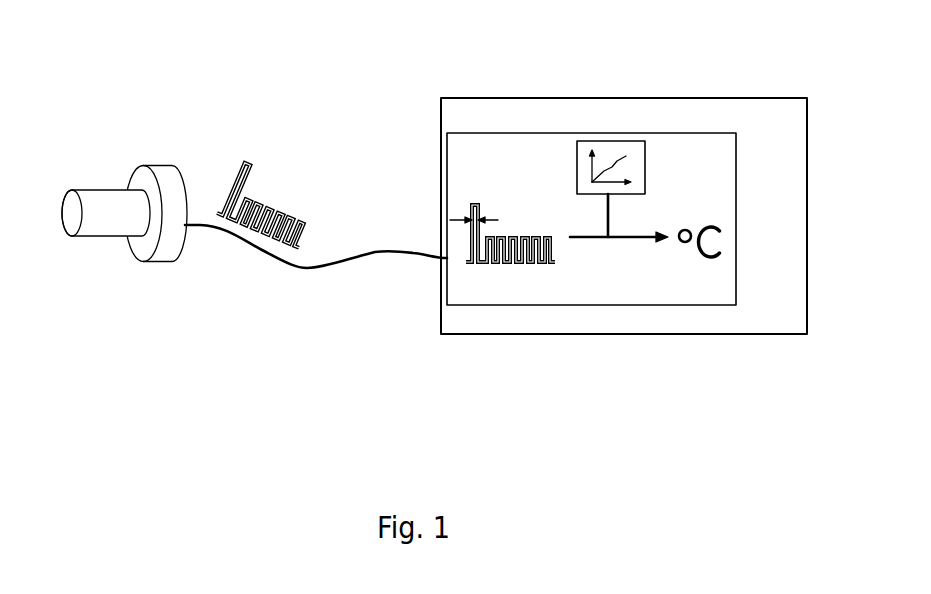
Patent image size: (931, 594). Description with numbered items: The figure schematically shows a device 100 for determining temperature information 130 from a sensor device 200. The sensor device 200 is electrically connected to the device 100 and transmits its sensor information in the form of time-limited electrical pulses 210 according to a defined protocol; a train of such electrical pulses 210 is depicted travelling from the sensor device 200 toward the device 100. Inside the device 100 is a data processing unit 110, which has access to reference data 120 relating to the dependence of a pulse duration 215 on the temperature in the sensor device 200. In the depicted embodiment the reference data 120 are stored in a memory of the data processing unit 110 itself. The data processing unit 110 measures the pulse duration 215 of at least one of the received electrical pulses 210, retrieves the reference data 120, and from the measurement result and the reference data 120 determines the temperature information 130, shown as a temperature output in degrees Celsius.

The device 100 is at (538, 334).
The data processing unit 110 is at (693, 305).
The reference data 120 is at (610, 141).
The temperature information 130 is at (705, 215).
The sensor device 200 is at (140, 262).
The electrical pulses 210 is at (281, 189).
The pulse duration 215 is at (481, 203).